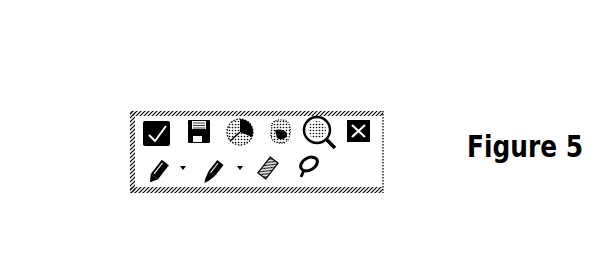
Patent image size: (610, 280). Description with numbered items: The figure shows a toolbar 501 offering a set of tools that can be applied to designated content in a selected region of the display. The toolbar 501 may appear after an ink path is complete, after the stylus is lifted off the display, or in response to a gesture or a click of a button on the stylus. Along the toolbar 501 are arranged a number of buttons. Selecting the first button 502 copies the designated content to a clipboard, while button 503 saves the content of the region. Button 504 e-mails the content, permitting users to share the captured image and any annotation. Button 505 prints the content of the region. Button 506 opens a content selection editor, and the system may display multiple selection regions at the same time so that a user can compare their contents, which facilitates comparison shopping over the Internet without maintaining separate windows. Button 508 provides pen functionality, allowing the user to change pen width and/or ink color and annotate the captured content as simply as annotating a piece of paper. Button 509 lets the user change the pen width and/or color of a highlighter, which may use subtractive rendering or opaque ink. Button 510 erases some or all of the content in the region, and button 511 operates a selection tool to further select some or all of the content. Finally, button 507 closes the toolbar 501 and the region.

The toolbar 501 is at (383, 164).
The first button 502 is at (148, 122).
The button 503 is at (198, 119).
The button 504 is at (238, 120).
The button 505 is at (275, 122).
The button 506 is at (320, 118).
The button 507 is at (366, 120).
The button 508 is at (152, 179).
The button 509 is at (210, 180).
The button 510 is at (273, 175).
The button 511 is at (313, 177).